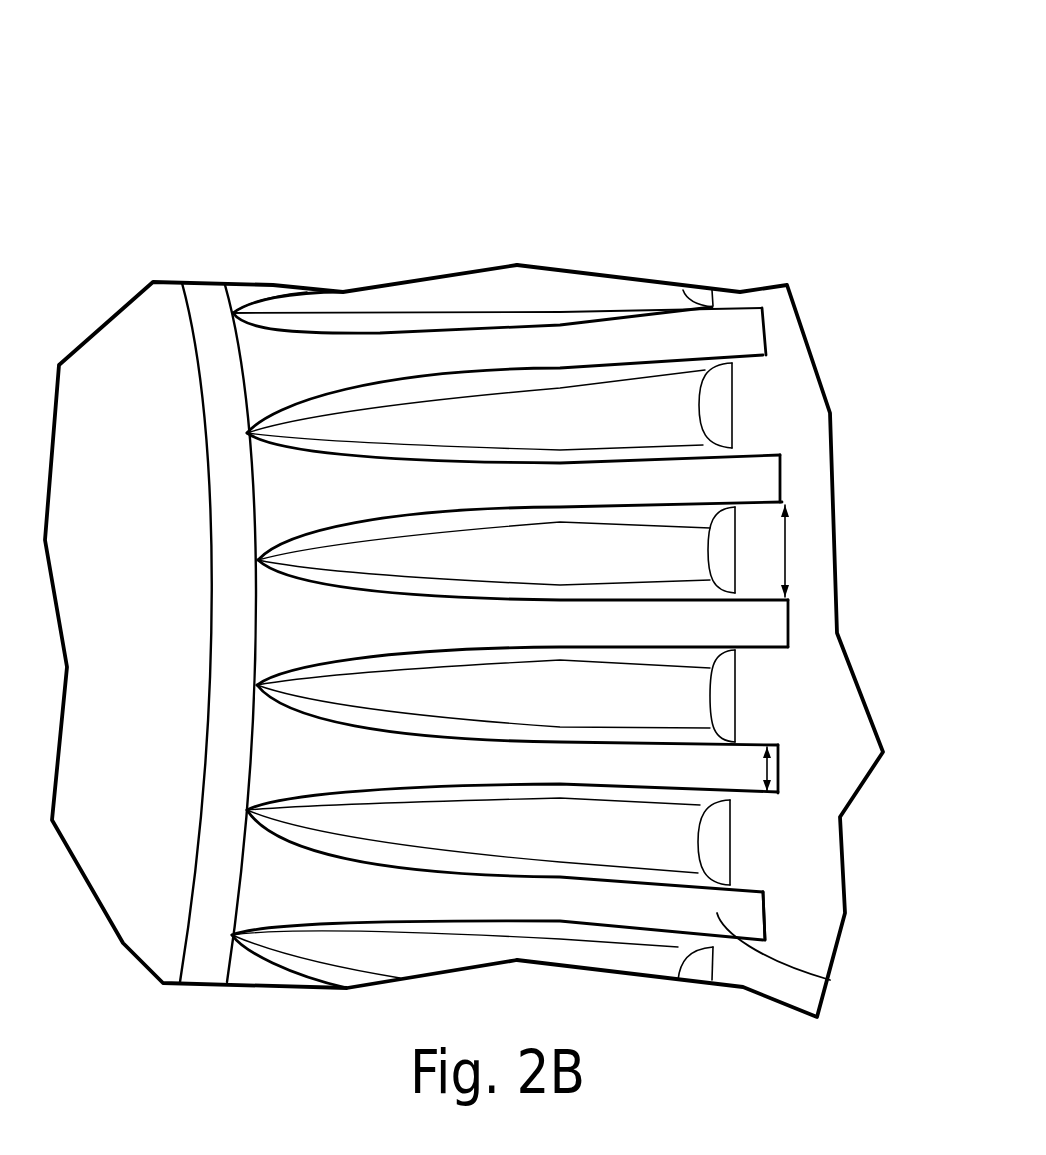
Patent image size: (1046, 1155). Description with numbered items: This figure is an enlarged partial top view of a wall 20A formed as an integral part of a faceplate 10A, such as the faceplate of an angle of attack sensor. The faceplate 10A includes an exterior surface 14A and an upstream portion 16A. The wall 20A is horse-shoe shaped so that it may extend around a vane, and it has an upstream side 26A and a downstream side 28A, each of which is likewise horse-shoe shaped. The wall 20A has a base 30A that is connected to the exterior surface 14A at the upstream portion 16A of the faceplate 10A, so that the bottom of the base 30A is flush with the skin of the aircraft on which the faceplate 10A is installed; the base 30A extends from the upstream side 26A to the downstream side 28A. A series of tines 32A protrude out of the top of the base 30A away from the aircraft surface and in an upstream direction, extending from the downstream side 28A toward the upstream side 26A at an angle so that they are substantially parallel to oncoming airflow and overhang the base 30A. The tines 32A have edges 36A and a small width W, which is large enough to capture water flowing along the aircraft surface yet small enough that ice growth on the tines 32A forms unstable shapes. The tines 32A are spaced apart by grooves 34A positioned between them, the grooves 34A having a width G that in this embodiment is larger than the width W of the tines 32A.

The faceplate 10A is at (114, 96).
The wall 20A is at (132, 212).
The exterior surface 14A is at (150, 852).
The upstream portion 16A is at (805, 685).
The upstream side 26A is at (780, 477).
The downstream side 28A is at (212, 542).
The base 30A is at (227, 722).
The tines 32A is at (830, 980).
The grooves 34A is at (648, 833).
The edges 36A is at (767, 914).